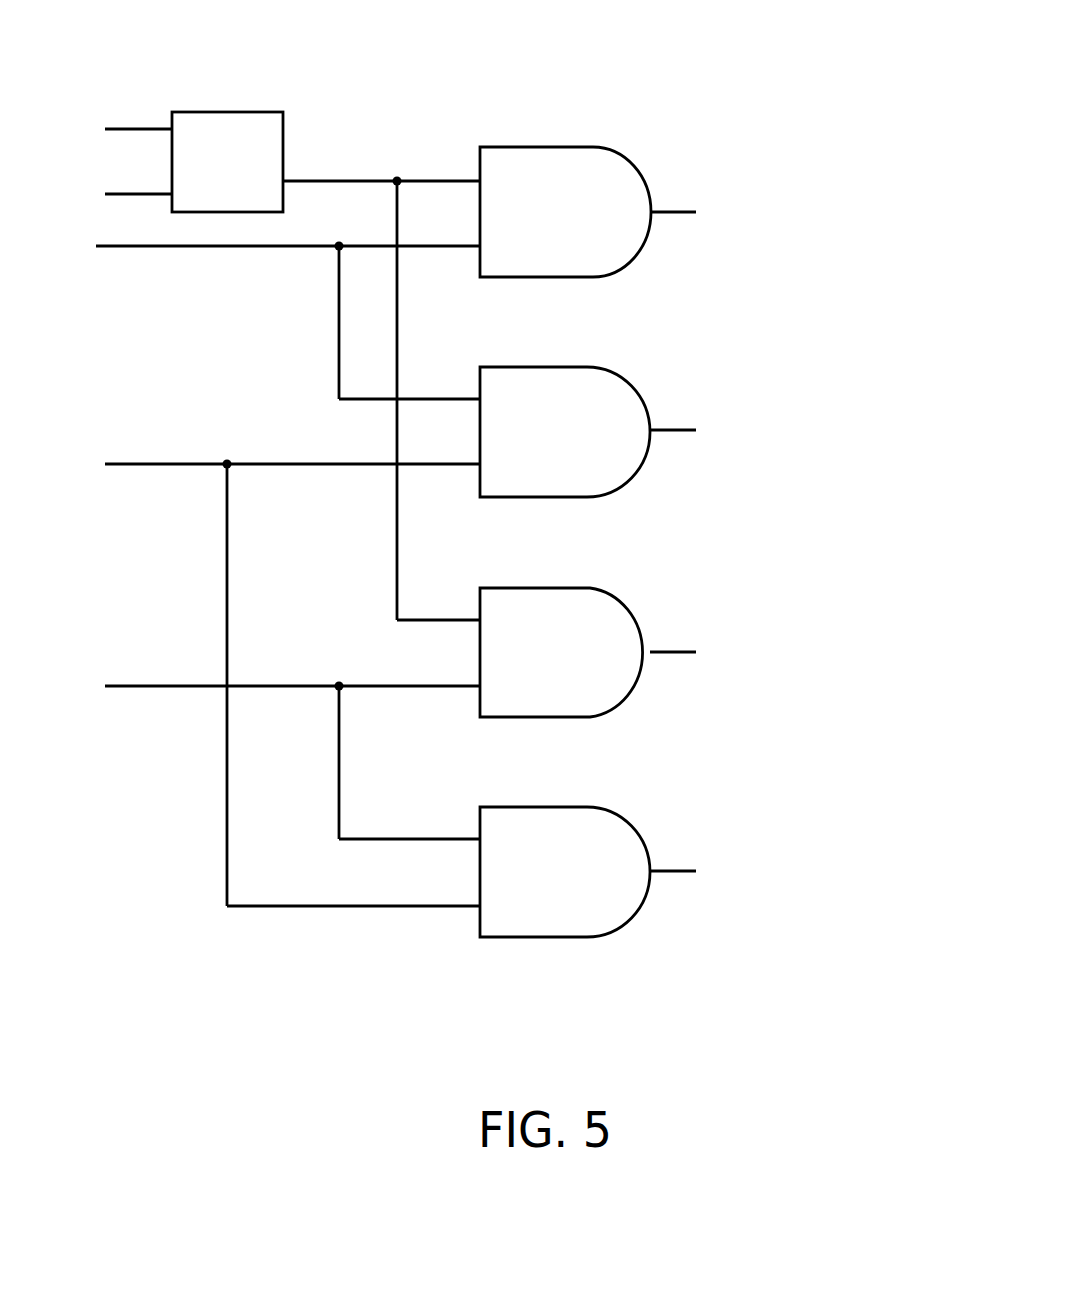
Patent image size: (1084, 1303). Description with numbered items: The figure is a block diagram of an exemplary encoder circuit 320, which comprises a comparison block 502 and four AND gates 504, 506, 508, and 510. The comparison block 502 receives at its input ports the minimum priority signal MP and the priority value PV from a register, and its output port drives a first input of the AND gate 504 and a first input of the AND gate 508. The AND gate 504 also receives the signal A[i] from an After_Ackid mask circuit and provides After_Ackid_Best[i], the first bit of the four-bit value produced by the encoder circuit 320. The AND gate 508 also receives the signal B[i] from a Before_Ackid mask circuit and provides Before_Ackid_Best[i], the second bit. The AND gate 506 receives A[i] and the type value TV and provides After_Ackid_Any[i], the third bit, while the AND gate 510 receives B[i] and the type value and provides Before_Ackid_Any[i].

The encoder circuit 320 is at (755, 1022).
The comparison block 502 is at (227, 112).
The AND gate 504 is at (546, 147).
The AND gate 506 is at (583, 367).
The AND gate 508 is at (593, 588).
The AND gate 510 is at (583, 807).